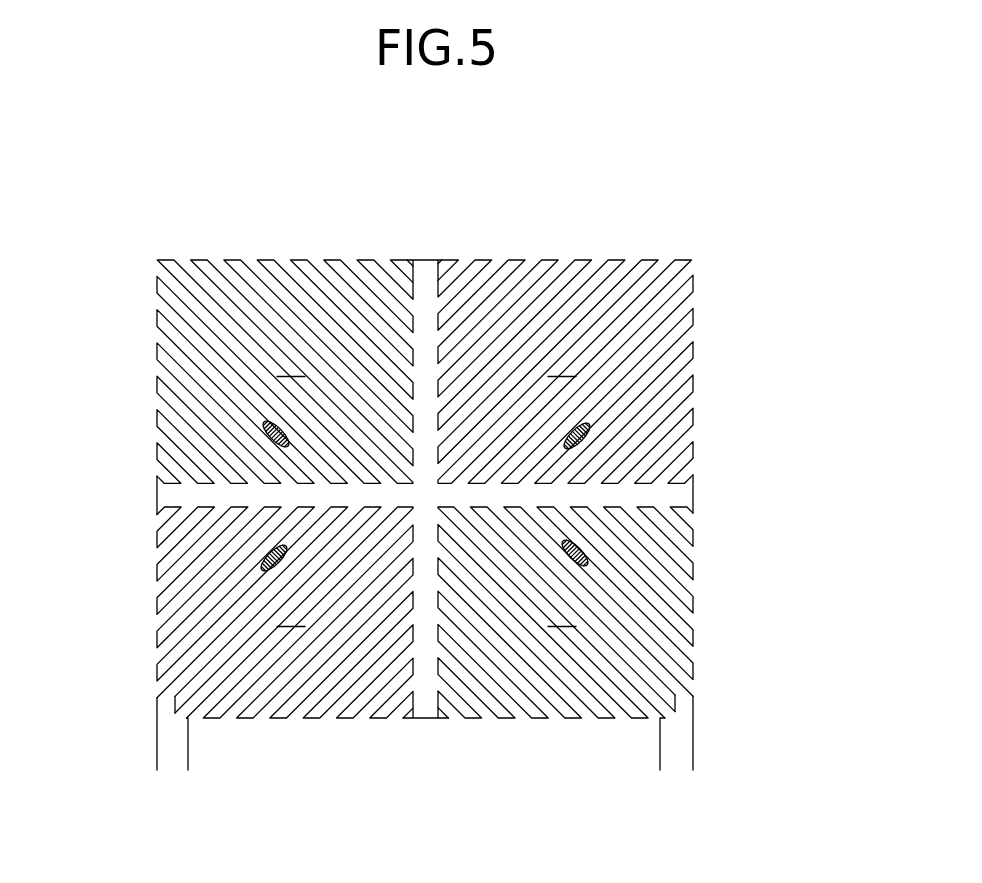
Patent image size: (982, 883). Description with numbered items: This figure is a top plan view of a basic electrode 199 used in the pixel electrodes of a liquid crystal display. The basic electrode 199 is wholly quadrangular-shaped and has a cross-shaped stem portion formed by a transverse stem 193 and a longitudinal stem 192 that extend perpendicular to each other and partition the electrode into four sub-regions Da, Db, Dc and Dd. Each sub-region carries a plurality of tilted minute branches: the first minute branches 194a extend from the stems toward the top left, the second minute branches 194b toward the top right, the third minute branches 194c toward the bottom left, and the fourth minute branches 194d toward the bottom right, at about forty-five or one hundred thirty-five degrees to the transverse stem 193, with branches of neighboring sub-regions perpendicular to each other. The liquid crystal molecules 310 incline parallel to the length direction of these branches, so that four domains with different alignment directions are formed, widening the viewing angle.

The basic electrode 199 is at (711, 209).
The longitudinal stem 192 is at (440, 356).
The transverse stem 193 is at (608, 508).
The first minute branches 194a is at (283, 305).
The second minute branches 194b is at (601, 302).
The third minute branches 194c is at (187, 625).
The fourth minute branches 194d is at (613, 680).
The liquid crystal molecules 310 is at (590, 432).